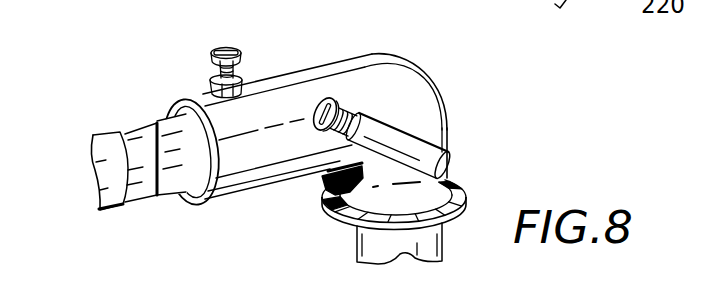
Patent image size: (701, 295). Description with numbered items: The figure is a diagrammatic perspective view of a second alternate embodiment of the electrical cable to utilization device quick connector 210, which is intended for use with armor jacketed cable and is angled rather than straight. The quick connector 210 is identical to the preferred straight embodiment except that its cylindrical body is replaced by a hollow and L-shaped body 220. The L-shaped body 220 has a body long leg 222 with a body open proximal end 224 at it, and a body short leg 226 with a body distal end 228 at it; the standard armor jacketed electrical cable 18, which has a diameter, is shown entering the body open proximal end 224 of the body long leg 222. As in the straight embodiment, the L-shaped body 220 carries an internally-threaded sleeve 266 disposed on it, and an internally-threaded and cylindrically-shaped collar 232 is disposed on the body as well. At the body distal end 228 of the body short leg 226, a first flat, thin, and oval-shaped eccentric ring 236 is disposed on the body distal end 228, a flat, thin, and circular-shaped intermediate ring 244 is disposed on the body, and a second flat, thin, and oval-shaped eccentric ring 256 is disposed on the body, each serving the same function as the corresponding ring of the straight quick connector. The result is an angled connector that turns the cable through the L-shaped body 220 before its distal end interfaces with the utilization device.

The standard armor jacketed electrical cable 18 is at (108, 147).
The electrical cable to utilization device quick connector 210 is at (151, 87).
The hollow and L-shaped body 220 is at (338, 53).
The body long leg 222 is at (293, 67).
The body open proximal end 224 is at (177, 103).
The body short leg 226 is at (447, 97).
The body distal end 228 is at (447, 175).
The internally-threaded and cylindrically-shaped collar 232 is at (249, 72).
The first flat, thin, and oval-shaped eccentric ring 236 is at (315, 186).
The flat, thin, and circular-shaped intermediate ring 244 is at (463, 197).
The second flat, thin, and oval-shaped eccentric ring 256 is at (325, 208).
The internally-threaded sleeve 266 is at (388, 129).